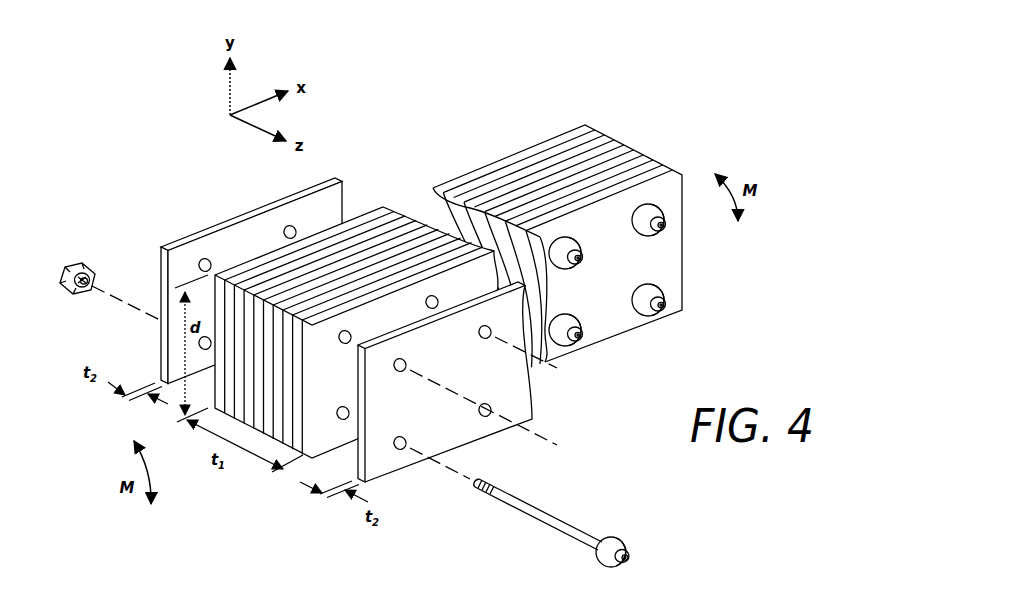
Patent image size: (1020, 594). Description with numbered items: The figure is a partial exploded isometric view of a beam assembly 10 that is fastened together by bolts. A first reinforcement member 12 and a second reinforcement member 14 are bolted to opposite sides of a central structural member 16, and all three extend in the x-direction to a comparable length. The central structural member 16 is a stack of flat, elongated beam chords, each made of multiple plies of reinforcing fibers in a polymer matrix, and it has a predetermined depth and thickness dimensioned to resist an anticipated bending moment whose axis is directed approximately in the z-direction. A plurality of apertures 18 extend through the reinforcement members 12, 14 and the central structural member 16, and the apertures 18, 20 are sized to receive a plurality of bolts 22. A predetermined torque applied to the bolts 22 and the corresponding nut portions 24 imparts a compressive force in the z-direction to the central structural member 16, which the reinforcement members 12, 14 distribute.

The beam assembly 10 is at (642, 56).
The first reinforcement member 12 is at (372, 469).
The second reinforcement member 14 is at (160, 352).
The central structural member 16 is at (448, 291).
The apertures 18 is at (209, 259).
The apertures 20 is at (352, 331).
The bolts 22 is at (634, 548).
The nut portions 24 is at (87, 262).